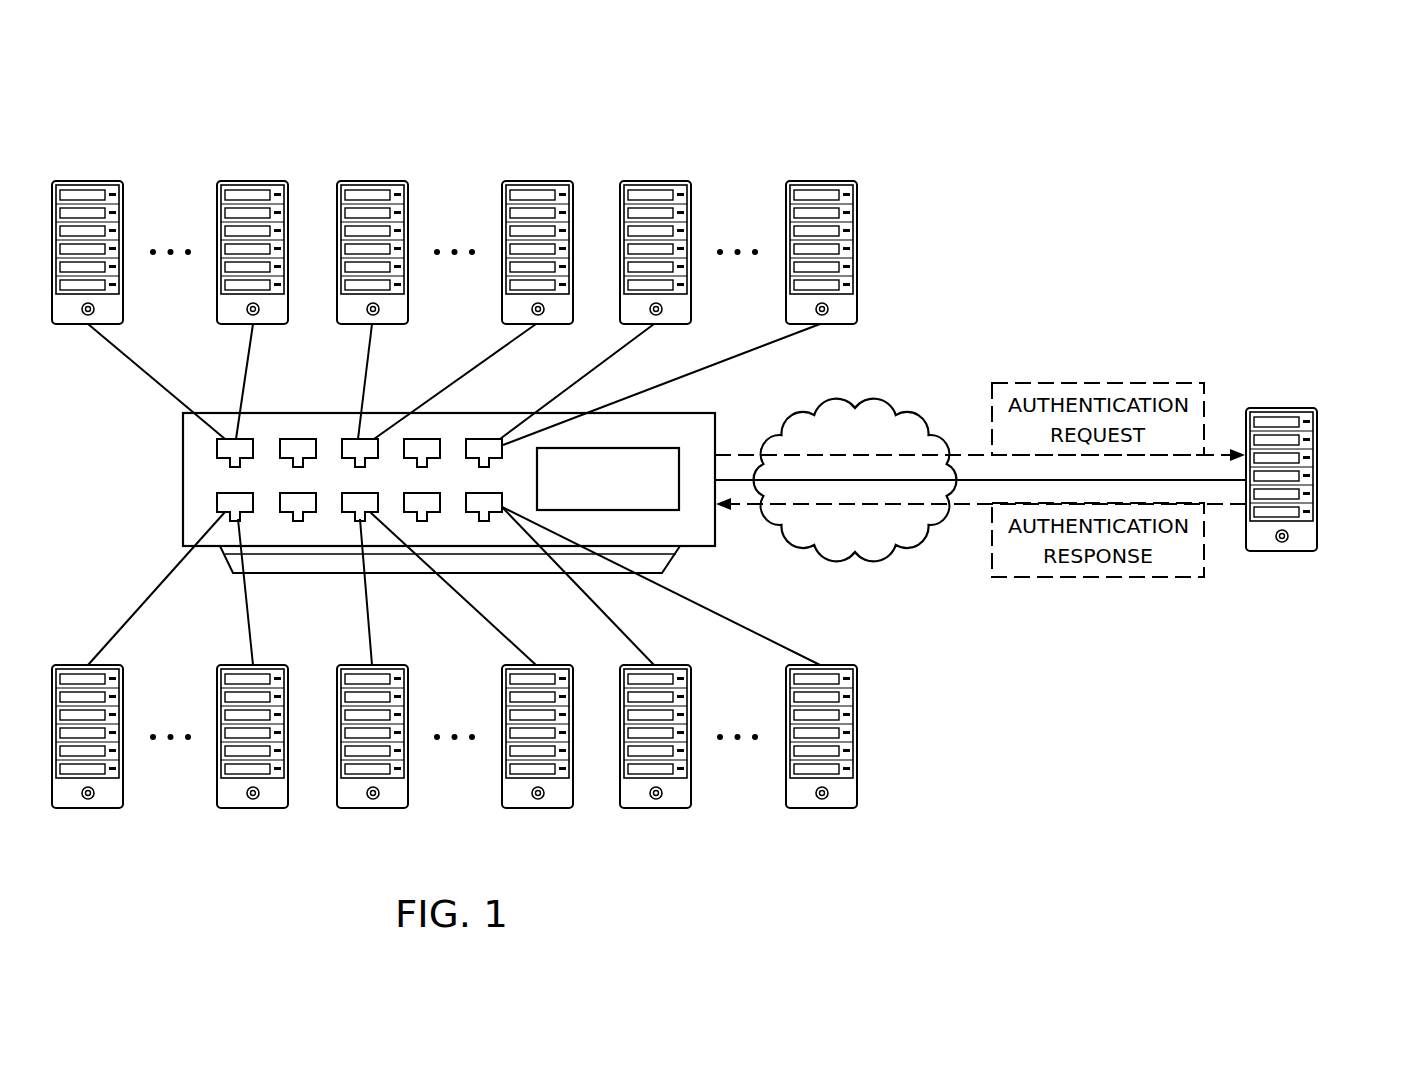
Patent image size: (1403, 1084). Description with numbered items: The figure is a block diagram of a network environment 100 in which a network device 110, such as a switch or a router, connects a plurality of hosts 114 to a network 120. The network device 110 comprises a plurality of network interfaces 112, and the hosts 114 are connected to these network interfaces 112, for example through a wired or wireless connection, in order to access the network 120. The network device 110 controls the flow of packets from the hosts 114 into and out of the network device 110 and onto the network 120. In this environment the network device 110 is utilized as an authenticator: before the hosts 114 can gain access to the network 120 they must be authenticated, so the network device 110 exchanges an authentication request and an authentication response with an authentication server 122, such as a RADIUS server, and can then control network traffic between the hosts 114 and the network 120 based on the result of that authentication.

The network environment 100 is at (1110, 125).
The network device 110 is at (176, 491).
The network interfaces 112 is at (307, 494).
The hosts 114 is at (88, 181).
The network 120 is at (855, 553).
The authentication server 122 is at (1282, 408).